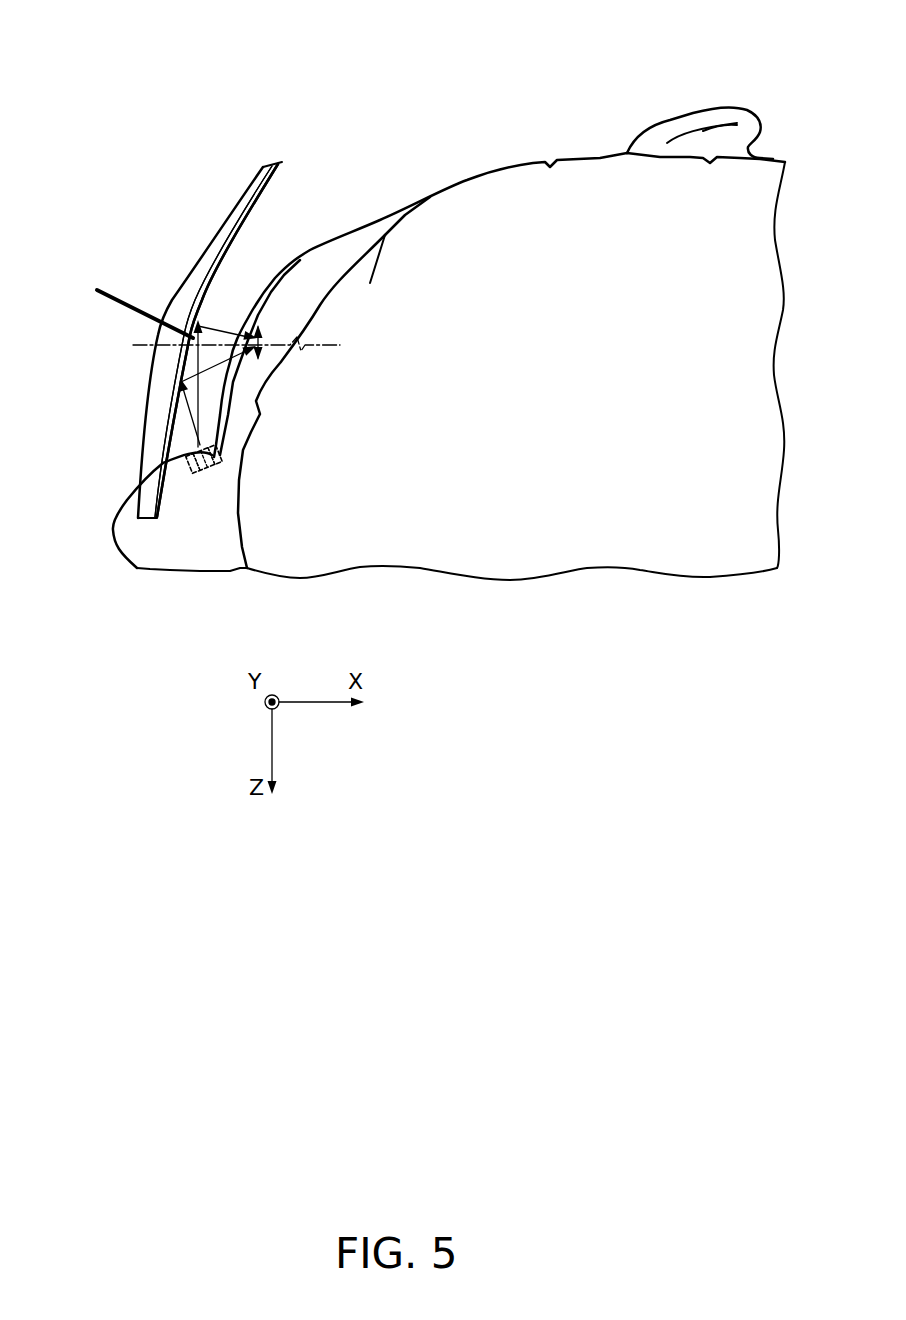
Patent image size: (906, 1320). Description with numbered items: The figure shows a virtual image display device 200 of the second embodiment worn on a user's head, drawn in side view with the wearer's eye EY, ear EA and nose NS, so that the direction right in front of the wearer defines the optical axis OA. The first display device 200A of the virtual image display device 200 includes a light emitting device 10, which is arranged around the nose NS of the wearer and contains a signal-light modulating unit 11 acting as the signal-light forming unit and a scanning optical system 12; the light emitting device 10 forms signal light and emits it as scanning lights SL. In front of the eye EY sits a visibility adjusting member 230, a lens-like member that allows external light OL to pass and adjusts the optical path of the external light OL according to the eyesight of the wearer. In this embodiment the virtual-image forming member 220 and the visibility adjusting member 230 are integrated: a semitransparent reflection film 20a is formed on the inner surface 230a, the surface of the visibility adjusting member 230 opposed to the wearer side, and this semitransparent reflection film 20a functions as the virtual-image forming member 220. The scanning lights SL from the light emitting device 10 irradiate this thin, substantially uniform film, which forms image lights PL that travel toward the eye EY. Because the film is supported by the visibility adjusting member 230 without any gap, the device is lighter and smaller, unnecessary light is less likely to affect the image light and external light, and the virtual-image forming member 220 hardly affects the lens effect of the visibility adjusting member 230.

The virtual image display device 200 is at (263, 80).
The first display device 200A is at (212, 150).
The visibility adjusting member 230 is at (230, 217).
The inner surface 230a is at (265, 194).
The virtual-image forming member 220 is at (215, 268).
The semitransparent reflection film 20a is at (175, 340).
The light emitting device 10 is at (203, 490).
The signal-light modulating unit 11 is at (186, 476).
The scanning optical system 12 is at (216, 470).
The eye EY is at (262, 338).
The ear EA is at (720, 112).
The nose NS is at (137, 545).
The external light OL is at (95, 299).
The optical axis OA is at (170, 338).
The scanning lights SL is at (198, 418).
The image lights PL is at (258, 325).